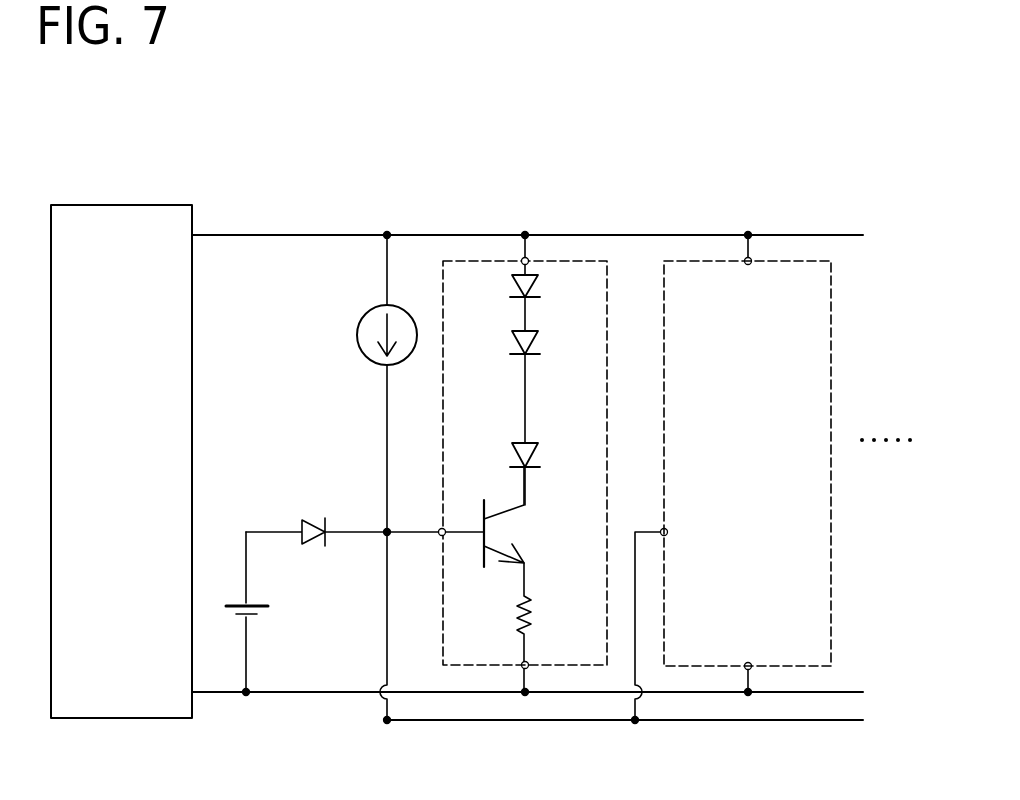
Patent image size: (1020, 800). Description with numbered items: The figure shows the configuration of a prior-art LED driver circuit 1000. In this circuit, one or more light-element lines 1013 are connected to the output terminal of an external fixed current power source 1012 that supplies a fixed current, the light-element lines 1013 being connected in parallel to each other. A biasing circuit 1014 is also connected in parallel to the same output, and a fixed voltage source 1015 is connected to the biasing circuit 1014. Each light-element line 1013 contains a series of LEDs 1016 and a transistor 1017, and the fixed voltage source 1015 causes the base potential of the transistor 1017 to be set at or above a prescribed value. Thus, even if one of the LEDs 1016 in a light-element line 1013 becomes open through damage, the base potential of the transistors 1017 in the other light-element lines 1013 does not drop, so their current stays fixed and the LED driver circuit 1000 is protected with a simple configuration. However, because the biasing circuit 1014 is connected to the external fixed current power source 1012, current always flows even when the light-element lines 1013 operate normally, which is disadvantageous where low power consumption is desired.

The LED driver circuit 1000 is at (499, 118).
The external fixed current power source 1012 is at (119, 204).
The light-element line 1013 is at (597, 256).
The biasing circuit 1014 is at (378, 394).
The fixed voltage source 1015 is at (274, 681).
The LED 1016 is at (513, 284).
The transistor 1017 is at (482, 565).